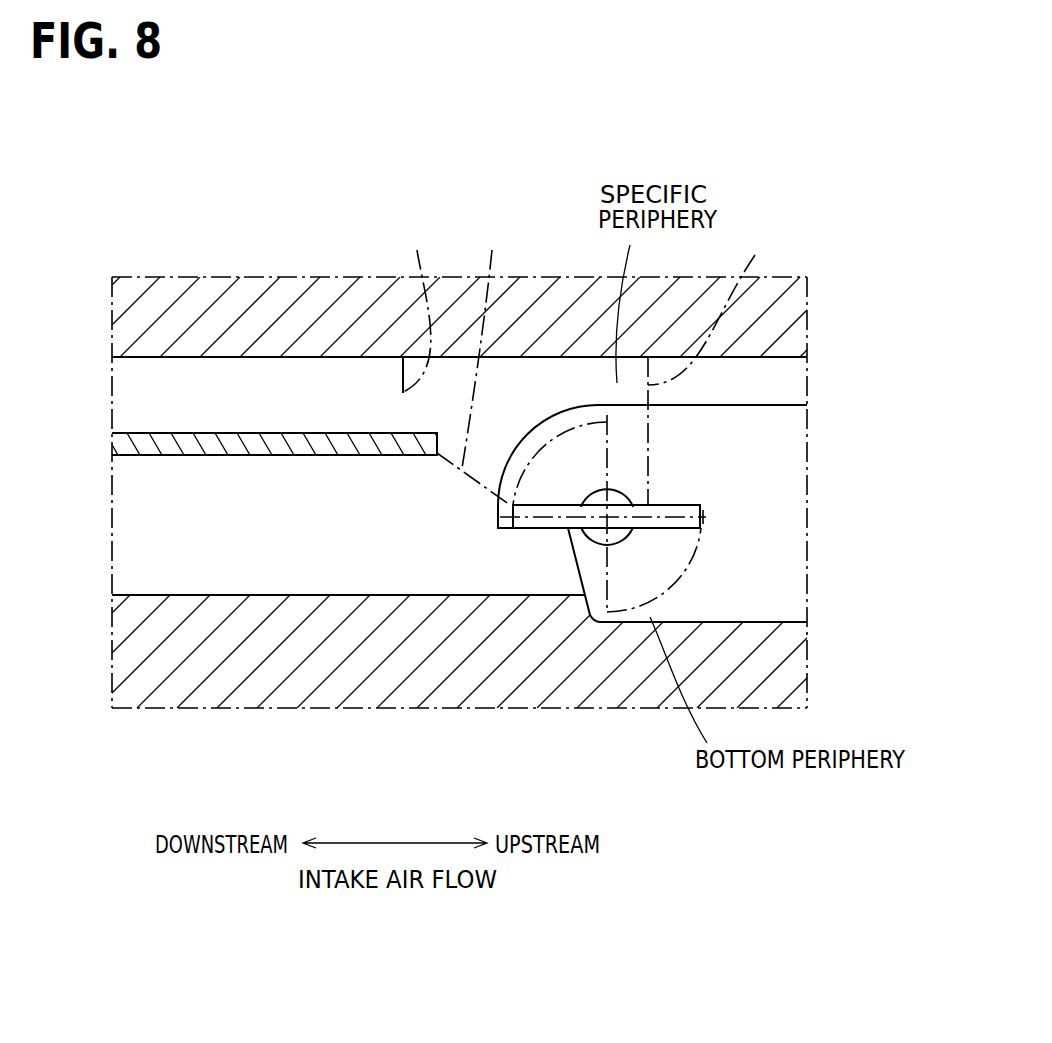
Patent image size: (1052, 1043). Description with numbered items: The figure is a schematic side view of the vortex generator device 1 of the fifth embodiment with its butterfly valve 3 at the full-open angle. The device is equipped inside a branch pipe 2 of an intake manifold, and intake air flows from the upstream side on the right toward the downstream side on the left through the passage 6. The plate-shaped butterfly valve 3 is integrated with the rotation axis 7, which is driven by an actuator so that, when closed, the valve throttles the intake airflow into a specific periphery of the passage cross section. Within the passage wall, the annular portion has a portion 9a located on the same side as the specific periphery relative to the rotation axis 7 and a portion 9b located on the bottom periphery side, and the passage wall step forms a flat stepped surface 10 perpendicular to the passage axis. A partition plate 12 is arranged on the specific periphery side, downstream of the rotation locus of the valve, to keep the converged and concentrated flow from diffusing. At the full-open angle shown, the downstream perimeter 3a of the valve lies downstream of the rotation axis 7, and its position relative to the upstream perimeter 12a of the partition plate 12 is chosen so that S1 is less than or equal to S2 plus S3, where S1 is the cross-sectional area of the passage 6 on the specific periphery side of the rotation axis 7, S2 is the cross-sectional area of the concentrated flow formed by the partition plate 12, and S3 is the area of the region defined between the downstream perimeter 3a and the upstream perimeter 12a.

The vortex generator device 1 is at (121, 236).
The branch pipe 2 is at (170, 690).
The butterfly valve 3 is at (681, 525).
The downstream perimeter 3a is at (512, 517).
The passage 6 is at (135, 503).
The rotation axis 7 is at (625, 500).
The portion of the annular portion 9a is at (548, 383).
The portion of the annular portion 9b is at (576, 562).
The stepped surface 10 is at (598, 622).
The partition plate 12 is at (160, 440).
The upstream perimeter 12a is at (440, 437).
The cross-sectional area S1 is at (720, 303).
The cross-sectional area of the concentrated flow S2 is at (421, 304).
The area of region S3 is at (479, 360).